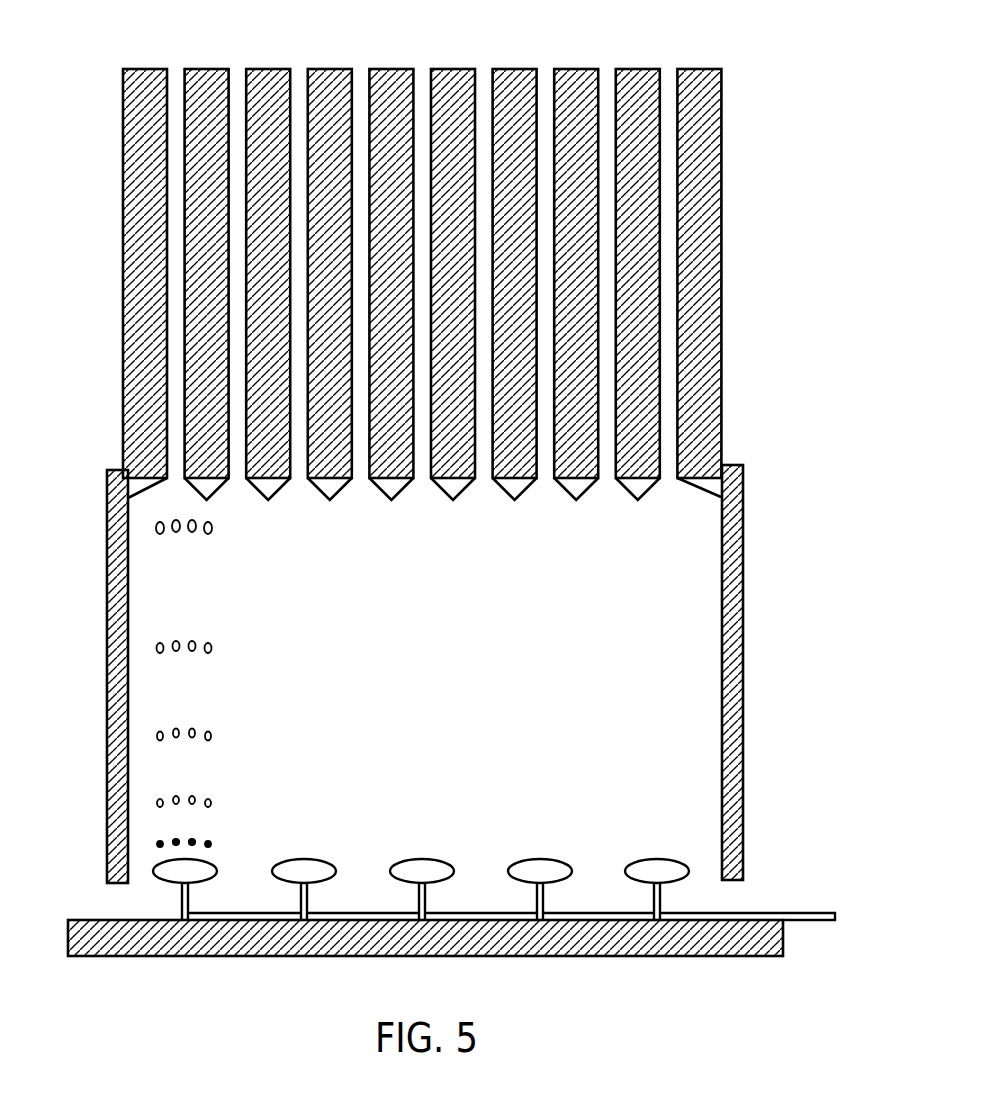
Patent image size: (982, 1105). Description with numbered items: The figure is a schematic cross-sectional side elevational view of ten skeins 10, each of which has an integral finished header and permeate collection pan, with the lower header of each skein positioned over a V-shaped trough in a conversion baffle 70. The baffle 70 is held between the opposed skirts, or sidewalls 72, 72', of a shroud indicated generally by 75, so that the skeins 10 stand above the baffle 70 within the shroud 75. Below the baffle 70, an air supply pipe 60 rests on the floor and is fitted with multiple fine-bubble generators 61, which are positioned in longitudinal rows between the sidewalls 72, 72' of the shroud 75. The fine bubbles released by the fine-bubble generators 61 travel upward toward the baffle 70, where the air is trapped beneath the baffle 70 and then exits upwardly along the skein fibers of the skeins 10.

The skein 10 is at (392, 69).
The baffle 70 is at (341, 497).
The shroud 75 is at (456, 674).
The sidewall of the shroud 72 is at (765, 672).
The sidewall of the shroud 72' is at (85, 676).
The fine-bubble generator 61 is at (317, 860).
The air supply pipe 60 is at (805, 913).